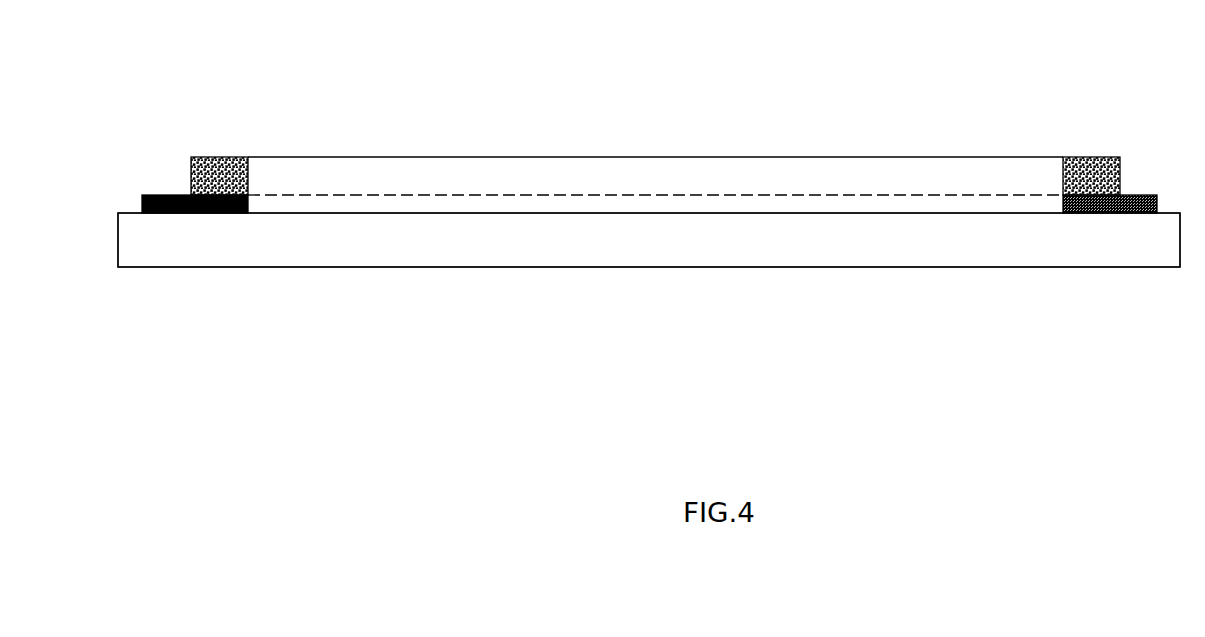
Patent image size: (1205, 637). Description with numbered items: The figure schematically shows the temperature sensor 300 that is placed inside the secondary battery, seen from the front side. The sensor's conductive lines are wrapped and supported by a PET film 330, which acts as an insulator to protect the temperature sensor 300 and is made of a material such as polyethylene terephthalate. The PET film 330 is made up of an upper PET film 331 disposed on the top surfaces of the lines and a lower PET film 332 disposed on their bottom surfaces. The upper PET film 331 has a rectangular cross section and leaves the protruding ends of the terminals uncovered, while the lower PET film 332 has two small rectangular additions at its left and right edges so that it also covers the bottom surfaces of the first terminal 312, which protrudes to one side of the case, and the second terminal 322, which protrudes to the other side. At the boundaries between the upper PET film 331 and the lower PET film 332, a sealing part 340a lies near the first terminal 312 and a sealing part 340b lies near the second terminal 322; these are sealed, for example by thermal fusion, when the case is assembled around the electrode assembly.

The temperature sensor 300 is at (674, 80).
The first terminal 312 is at (167, 195).
The second terminal 322 is at (1143, 203).
The PET film 330 is at (1042, 332).
The upper PET film 331 is at (470, 175).
The lower PET film 332 is at (540, 252).
The sealing part 340a is at (215, 170).
The sealing part 340b is at (1090, 170).